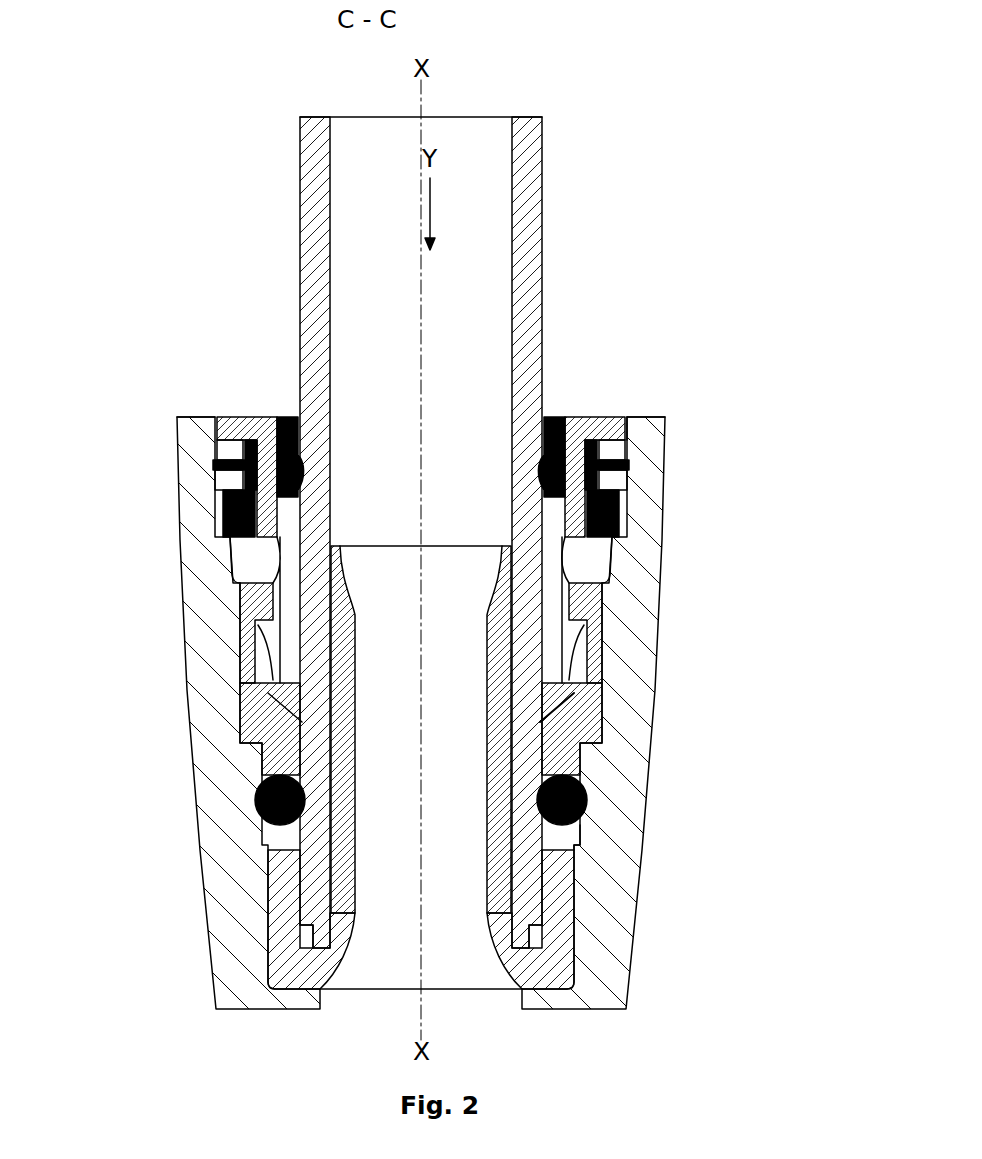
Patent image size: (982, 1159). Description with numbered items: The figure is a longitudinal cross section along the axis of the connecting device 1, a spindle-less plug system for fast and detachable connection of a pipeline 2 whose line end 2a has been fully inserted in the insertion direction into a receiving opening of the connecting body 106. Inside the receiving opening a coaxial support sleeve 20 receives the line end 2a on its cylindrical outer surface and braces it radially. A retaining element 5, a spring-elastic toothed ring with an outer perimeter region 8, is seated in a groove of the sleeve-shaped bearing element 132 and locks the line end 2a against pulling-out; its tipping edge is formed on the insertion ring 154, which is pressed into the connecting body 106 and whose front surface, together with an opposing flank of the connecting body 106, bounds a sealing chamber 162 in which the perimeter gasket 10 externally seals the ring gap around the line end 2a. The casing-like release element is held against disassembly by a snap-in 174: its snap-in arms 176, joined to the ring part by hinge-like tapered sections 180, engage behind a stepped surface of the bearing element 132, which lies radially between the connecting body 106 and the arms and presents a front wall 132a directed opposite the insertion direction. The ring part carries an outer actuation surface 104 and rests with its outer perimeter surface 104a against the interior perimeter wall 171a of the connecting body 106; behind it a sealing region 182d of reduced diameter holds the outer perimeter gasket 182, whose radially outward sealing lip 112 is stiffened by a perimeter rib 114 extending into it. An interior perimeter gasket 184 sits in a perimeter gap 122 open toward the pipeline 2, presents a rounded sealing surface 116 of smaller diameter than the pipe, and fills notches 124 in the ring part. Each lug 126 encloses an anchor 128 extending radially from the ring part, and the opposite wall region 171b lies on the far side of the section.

The connecting device 1 is at (168, 246).
The pipeline 2 is at (524, 166).
The line end 2a is at (515, 925).
The retaining element 5 is at (545, 712).
The outer perimeter region 8 is at (597, 730).
The perimeter gasket 10 is at (597, 805).
The support sleeve 20 is at (492, 872).
The outer actuation surface 104 is at (617, 450).
The outer perimeter surface 104a is at (222, 450).
The connecting body 106 is at (225, 882).
The sealing lip 112 is at (635, 455).
The perimeter rib 114 is at (270, 450).
The sealing surface 116 is at (300, 470).
The perimeter gap 122 is at (583, 450).
The notches 124 is at (292, 425).
The lug 126 is at (225, 515).
The anchor 128 is at (285, 513).
The bearing element 132 is at (252, 635).
The front wall 132a is at (240, 588).
The insertion ring 154 is at (600, 790).
The sealing chamber 162 is at (545, 780).
The interior perimeter wall 171a is at (217, 477).
The spring element 171b is at (607, 550).
The snap-in 174 is at (272, 645).
The snap-in arms 176 is at (262, 640).
The hinge-like tapered sections 180 is at (275, 562).
The outer perimeter gasket 182 is at (245, 447).
The sealing region 182d is at (633, 428).
The interior perimeter gasket 184 is at (540, 468).